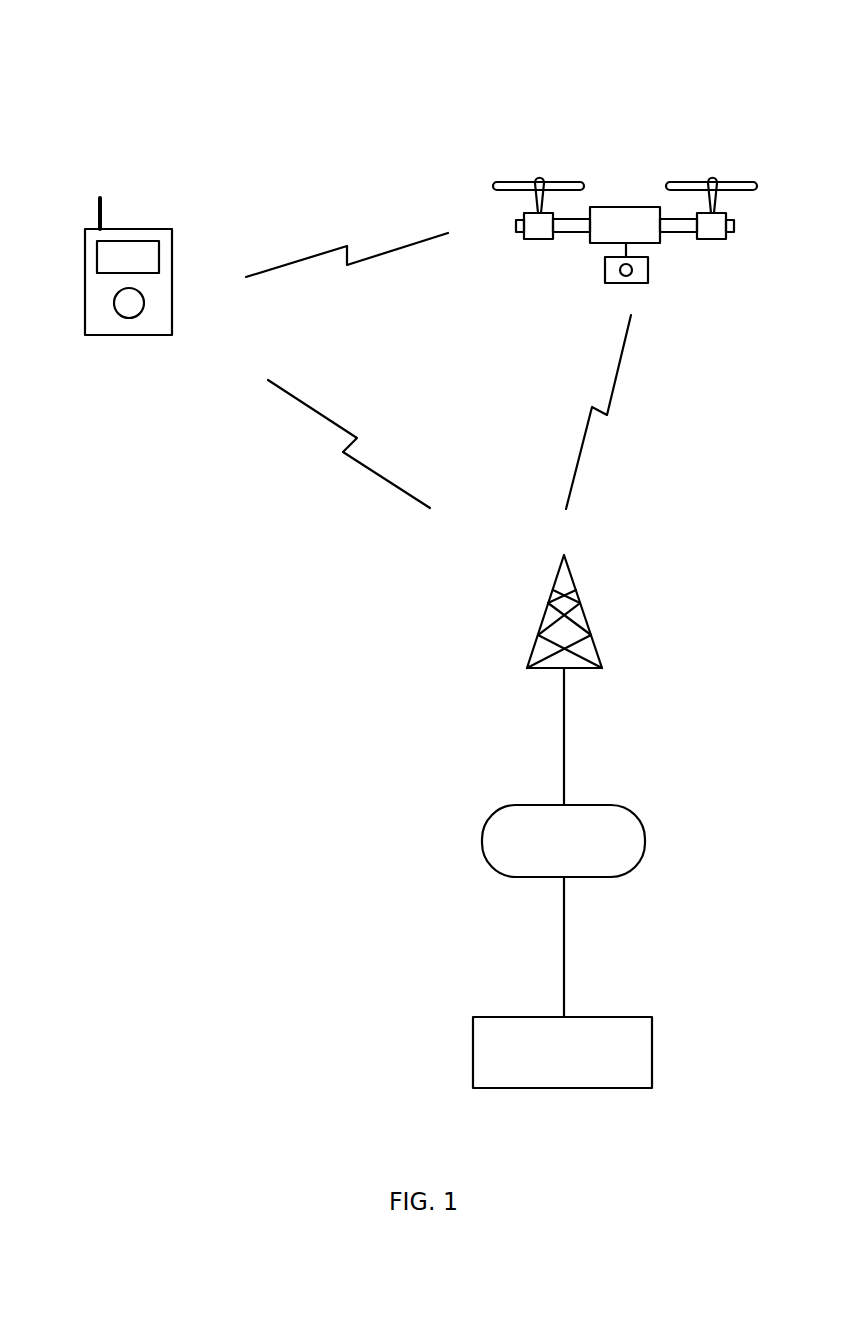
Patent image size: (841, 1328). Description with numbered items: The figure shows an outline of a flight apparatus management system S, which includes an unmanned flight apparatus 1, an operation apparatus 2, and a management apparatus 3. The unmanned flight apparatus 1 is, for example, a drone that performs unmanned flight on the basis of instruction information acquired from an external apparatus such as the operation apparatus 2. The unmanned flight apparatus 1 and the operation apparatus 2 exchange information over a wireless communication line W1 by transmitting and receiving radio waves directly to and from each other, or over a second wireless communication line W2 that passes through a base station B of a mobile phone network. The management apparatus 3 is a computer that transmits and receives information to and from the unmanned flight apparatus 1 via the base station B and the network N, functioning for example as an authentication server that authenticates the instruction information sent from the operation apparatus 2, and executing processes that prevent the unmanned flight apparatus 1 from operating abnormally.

The flight apparatus management system S is at (377, 64).
The unmanned flight apparatus 1 is at (625, 206).
The operation apparatus 2 is at (145, 229).
The management apparatus 3 is at (600, 1017).
The base station B is at (588, 621).
The network N is at (600, 805).
The wireless communication line W1 is at (277, 265).
The second wireless communication line W2 is at (302, 402).